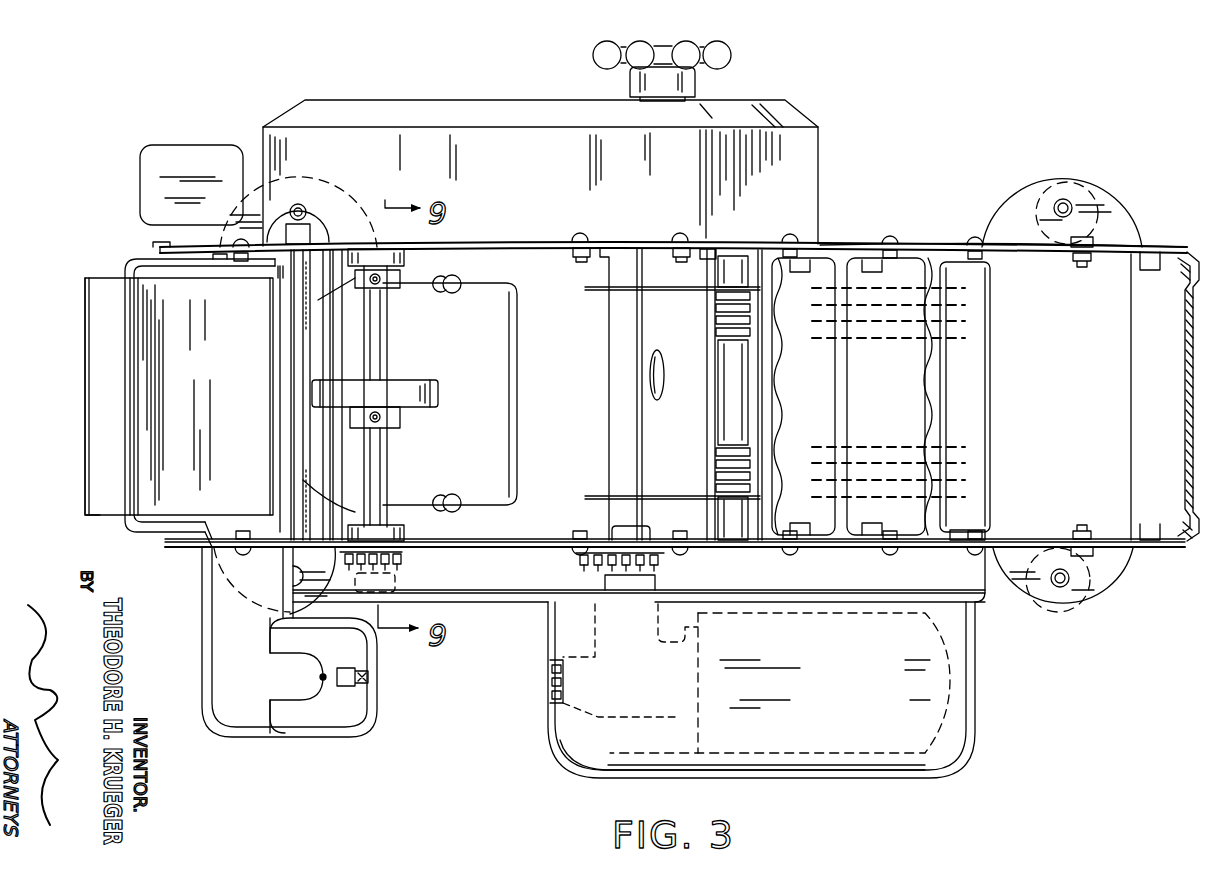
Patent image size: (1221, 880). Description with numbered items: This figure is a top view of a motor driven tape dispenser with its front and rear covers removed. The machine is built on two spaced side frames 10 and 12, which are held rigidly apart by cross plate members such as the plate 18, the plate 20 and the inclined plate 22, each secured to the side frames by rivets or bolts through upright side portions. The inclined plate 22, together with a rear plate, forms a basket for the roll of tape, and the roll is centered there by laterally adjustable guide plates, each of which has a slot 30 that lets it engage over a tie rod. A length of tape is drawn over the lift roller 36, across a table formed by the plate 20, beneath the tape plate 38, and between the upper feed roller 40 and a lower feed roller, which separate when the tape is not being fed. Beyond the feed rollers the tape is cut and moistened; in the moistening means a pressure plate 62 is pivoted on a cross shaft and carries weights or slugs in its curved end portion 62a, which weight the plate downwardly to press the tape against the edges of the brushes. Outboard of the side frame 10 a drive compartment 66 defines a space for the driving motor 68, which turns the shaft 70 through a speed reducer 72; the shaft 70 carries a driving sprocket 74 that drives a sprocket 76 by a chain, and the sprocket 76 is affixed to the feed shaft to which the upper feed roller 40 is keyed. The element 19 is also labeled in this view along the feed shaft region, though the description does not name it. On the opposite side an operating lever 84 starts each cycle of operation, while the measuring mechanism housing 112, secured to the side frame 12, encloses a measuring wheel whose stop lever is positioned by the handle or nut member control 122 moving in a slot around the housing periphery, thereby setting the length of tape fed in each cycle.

The side frame 10 is at (1117, 547).
The side frame 12 is at (925, 245).
The cross plate member 18 is at (420, 562).
The shaft 19 is at (378, 520).
The cross plate member 20 is at (592, 393).
The inclined plate 22 is at (648, 458).
The slot 30 is at (965, 338).
The lift roller 36 is at (990, 402).
The tape plate 38 is at (485, 428).
The upper feed roller 40 is at (426, 385).
The pressure plate 62 is at (252, 418).
The curved end portion 62a is at (88, 486).
The drive compartment 66 is at (968, 692).
The driving motor 68 is at (890, 768).
The shaft 70 is at (660, 571).
The speed reducer 72 is at (560, 720).
The driving sprocket 74 is at (592, 570).
The sprocket 76 is at (398, 572).
The operating lever 84 is at (148, 138).
The measuring mechanism housing 112 is at (812, 168).
The handle or nut member control 122 is at (728, 58).